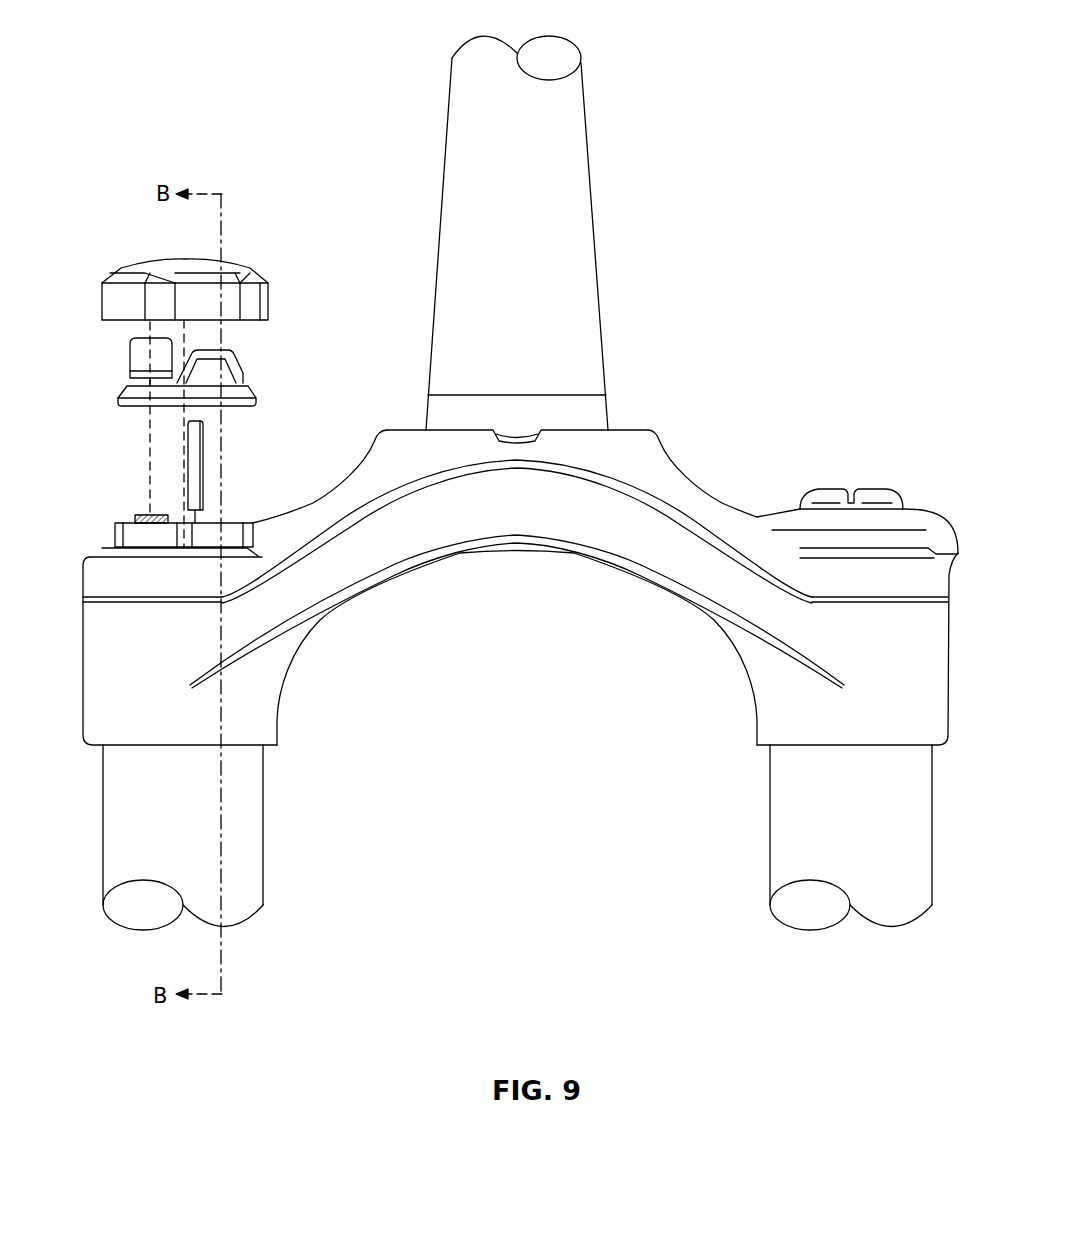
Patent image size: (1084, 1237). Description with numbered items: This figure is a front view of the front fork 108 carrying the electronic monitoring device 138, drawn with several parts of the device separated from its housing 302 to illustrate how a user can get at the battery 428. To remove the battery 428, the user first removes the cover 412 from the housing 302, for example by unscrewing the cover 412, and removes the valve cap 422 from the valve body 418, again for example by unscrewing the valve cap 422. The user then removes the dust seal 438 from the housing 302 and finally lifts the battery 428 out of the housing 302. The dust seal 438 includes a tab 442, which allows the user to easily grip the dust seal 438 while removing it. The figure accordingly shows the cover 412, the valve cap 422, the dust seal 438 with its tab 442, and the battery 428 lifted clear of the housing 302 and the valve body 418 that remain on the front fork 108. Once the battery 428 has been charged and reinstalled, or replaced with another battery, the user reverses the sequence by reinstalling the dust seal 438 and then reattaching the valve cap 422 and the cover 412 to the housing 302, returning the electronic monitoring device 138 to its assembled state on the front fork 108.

The front fork 108 is at (386, 142).
The electronic monitoring device 138 is at (301, 361).
The cover 412 is at (118, 302).
The valve cap 422 is at (140, 354).
The tab 442 is at (231, 368).
The dust seal 438 is at (121, 394).
The battery 428 is at (196, 470).
The valve body 418 is at (140, 513).
The housing 302 is at (120, 538).